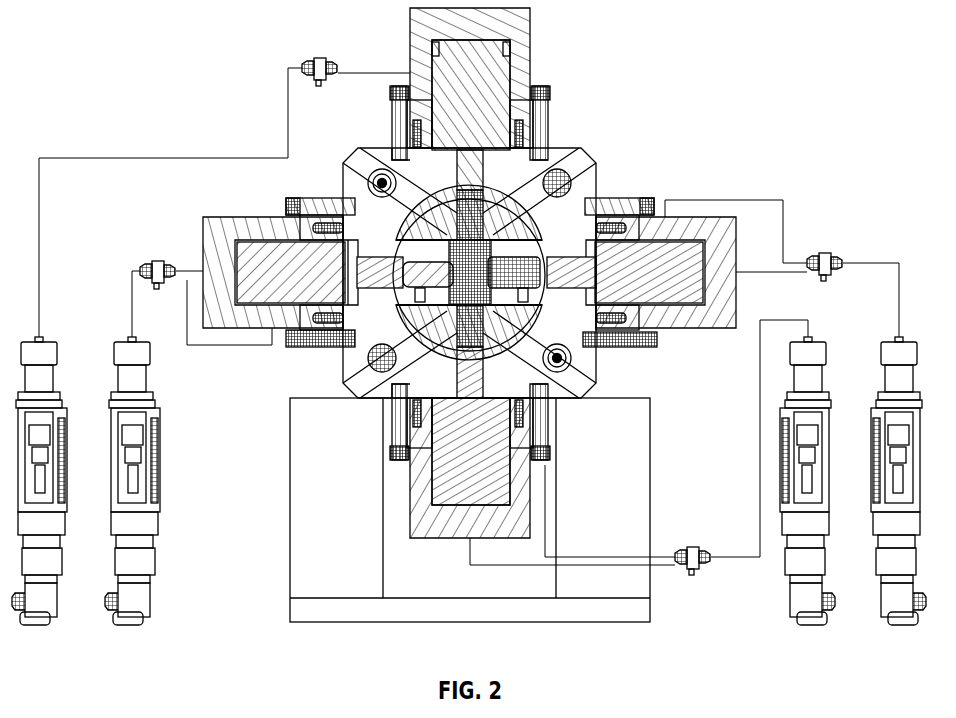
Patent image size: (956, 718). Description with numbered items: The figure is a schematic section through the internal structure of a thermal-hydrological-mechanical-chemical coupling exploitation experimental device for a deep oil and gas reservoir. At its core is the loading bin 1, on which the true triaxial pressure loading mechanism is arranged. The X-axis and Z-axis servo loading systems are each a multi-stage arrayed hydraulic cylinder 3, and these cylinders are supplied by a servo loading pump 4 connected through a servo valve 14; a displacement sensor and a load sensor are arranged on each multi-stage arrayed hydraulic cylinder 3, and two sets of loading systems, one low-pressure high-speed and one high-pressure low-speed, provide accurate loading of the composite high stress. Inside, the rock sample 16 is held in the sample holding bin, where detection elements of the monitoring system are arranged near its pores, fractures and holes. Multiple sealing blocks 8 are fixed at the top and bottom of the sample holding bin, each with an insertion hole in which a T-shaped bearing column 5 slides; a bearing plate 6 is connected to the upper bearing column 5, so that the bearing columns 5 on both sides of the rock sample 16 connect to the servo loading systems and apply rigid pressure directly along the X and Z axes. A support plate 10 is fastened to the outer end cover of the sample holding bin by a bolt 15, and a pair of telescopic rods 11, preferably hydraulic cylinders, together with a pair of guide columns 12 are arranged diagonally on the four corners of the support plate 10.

The loading bin 1 is at (362, 162).
The multi-stage arrayed hydraulic cylinder 3 is at (530, 56).
The servo loading pump 4 is at (42, 608).
The bearing column 5 is at (645, 345).
The bearing plate 6 is at (545, 215).
The sealing block 8 is at (440, 295).
The support plate 10 is at (395, 320).
The telescopic rod 11 is at (505, 318).
The guide column 12 is at (505, 240).
The servo valve 14 is at (312, 58).
The bolt 15 is at (545, 120).
The rock sample 16 is at (390, 196).